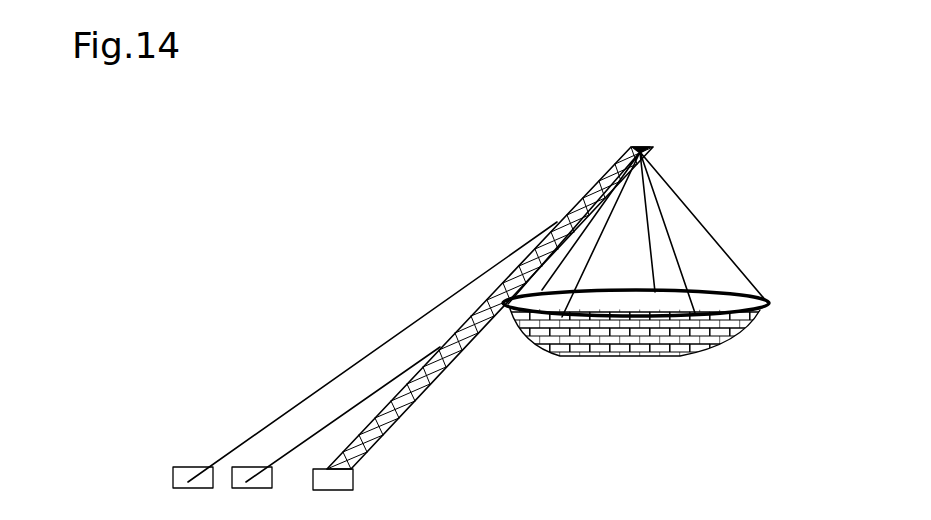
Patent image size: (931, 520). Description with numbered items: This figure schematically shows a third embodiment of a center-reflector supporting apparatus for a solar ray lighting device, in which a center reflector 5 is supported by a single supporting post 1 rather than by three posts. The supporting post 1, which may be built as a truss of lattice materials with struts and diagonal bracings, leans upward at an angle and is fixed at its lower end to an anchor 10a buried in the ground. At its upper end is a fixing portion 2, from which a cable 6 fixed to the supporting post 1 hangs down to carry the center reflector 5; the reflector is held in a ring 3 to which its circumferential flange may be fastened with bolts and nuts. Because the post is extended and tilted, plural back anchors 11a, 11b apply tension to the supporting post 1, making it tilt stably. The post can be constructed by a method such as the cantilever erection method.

The supporting post 1 is at (428, 388).
The fixing portion 2 is at (665, 150).
The ring 3 is at (768, 313).
The center reflector 5 is at (653, 366).
The cable 6 is at (700, 219).
The anchor 10a is at (353, 480).
The back anchor 11a is at (355, 406).
The back anchor 11b is at (390, 337).